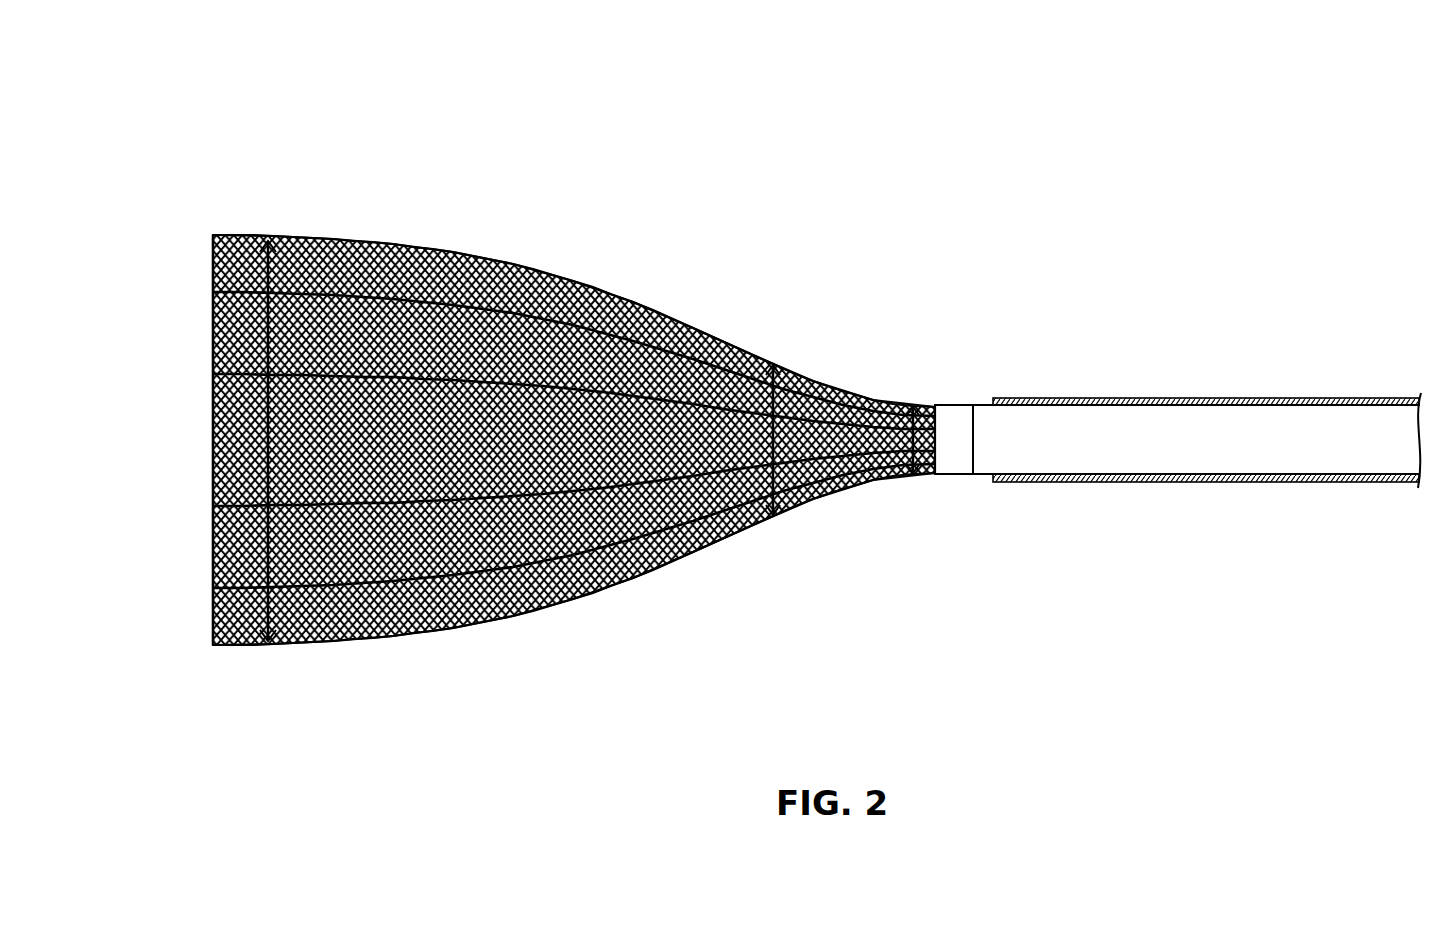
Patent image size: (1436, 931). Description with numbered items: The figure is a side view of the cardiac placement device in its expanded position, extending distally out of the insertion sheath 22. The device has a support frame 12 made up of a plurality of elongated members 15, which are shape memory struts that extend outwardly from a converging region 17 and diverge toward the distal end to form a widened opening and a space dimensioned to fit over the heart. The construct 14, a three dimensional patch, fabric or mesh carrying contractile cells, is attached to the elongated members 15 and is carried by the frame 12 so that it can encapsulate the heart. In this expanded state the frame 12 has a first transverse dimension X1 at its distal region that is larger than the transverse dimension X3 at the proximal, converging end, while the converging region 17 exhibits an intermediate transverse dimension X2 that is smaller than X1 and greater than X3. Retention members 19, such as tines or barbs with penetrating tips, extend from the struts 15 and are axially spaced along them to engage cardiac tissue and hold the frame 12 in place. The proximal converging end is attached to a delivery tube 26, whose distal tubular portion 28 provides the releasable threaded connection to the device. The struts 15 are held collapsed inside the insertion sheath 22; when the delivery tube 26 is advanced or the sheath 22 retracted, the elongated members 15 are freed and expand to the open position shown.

The support frame 12 is at (537, 615).
The construct 14 is at (433, 558).
The elongated members 15 is at (647, 540).
The converging region 17 is at (832, 332).
The retention members 19 is at (334, 186).
The insertion sheath 22 is at (1078, 398).
The delivery tube 26 is at (985, 478).
The tubular portion 28 is at (952, 406).
The first transverse dimension X1 is at (268, 442).
The transverse dimension at the transition region X2 is at (798, 504).
The transverse dimension at the proximal region X3 is at (888, 478).